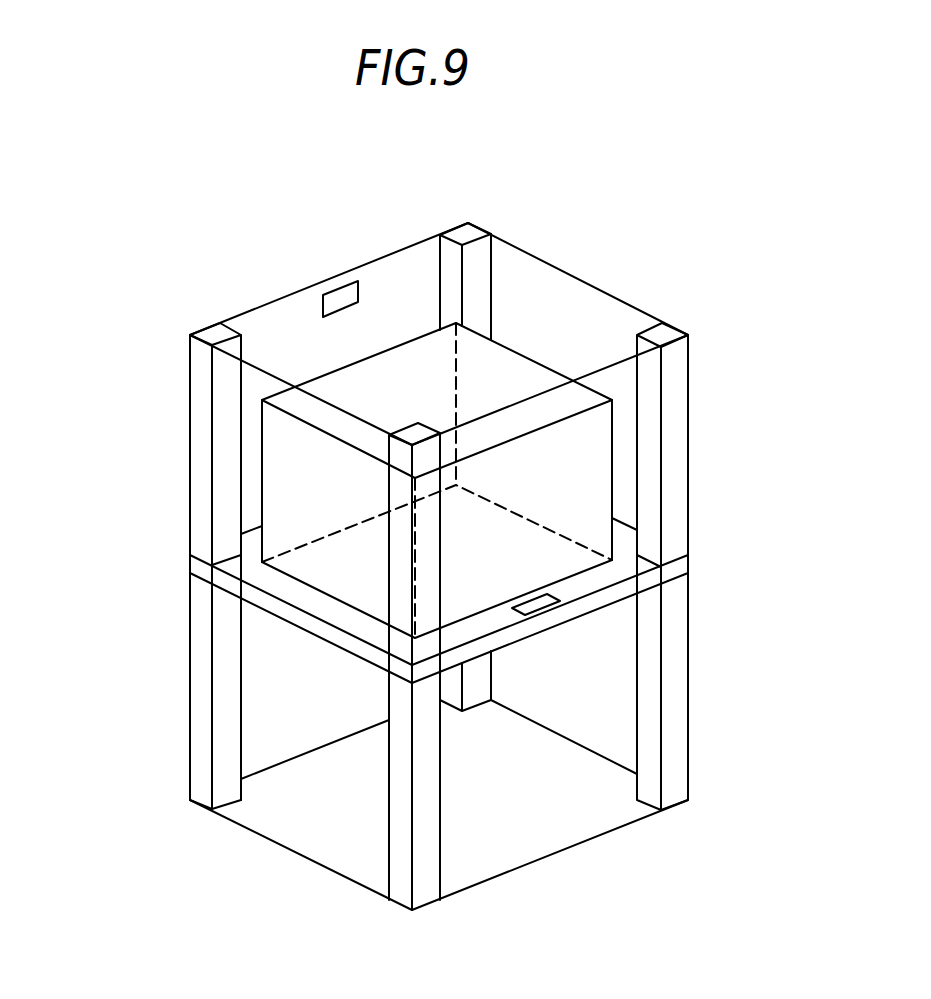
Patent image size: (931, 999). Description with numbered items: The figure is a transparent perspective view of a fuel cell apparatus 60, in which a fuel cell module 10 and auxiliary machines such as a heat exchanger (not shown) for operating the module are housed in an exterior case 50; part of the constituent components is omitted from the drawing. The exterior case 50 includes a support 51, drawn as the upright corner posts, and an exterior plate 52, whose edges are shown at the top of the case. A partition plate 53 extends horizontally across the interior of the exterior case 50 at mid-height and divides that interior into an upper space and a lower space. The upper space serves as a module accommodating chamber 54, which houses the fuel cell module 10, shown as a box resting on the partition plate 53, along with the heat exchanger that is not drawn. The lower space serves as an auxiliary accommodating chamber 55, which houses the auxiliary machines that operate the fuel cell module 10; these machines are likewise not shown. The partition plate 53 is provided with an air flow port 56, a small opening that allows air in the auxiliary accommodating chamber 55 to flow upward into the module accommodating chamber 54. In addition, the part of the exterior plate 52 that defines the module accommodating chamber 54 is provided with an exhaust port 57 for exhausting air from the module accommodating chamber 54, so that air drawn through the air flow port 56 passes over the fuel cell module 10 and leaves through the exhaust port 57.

The fuel cell module 10 is at (618, 473).
The exterior case 50 is at (184, 559).
The support 51 is at (213, 337).
The exterior plate 52 is at (287, 296).
The partition plate 53 is at (686, 566).
The module accommodating chamber 54 is at (542, 313).
The auxiliary accommodating chamber 55 is at (263, 689).
The air flow port 56 is at (528, 601).
The exhaust port 57 is at (333, 288).
The fuel cell apparatus 60 is at (504, 191).